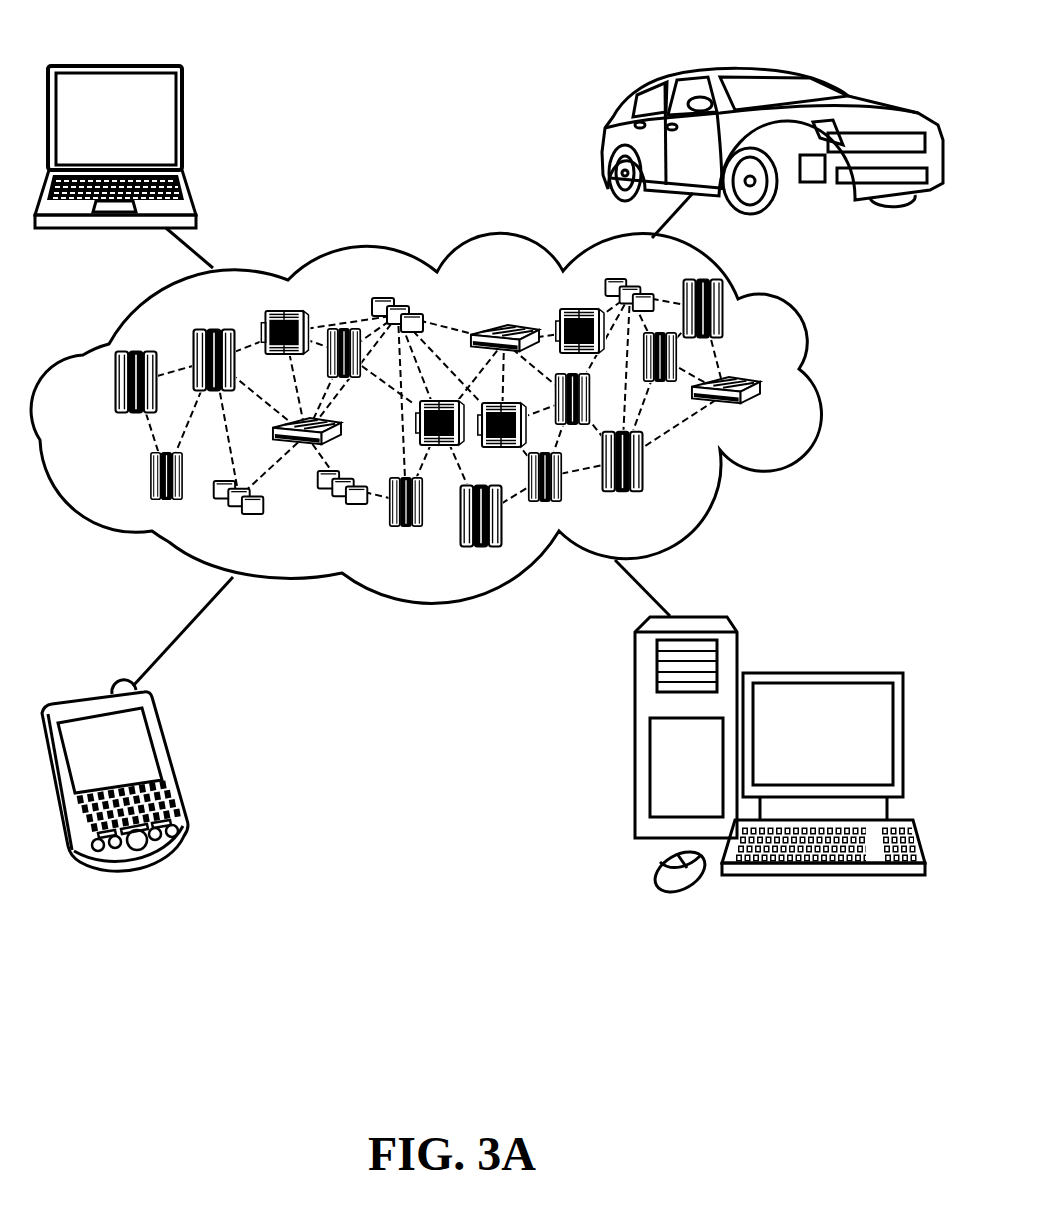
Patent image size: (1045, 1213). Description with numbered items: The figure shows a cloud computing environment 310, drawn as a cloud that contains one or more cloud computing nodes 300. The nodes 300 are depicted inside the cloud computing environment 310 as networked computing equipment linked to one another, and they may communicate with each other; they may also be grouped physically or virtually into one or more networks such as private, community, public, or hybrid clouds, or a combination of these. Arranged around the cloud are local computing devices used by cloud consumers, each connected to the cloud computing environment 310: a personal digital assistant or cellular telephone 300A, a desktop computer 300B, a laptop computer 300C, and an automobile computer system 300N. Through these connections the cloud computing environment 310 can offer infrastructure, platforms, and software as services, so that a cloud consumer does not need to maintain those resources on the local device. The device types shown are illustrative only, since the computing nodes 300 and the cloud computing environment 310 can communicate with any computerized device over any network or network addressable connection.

The cloud computing nodes 300 is at (770, 424).
The cloud computing environment 310 is at (821, 391).
The personal digital assistant or cellular telephone 300A is at (172, 766).
The desktop computer 300B is at (820, 673).
The laptop computer 300C is at (183, 128).
The automobile computer system 300N is at (605, 142).